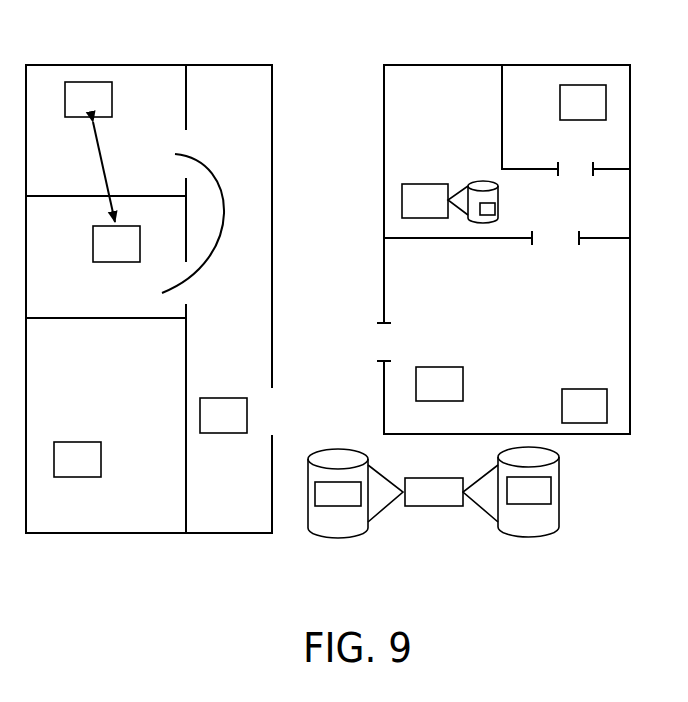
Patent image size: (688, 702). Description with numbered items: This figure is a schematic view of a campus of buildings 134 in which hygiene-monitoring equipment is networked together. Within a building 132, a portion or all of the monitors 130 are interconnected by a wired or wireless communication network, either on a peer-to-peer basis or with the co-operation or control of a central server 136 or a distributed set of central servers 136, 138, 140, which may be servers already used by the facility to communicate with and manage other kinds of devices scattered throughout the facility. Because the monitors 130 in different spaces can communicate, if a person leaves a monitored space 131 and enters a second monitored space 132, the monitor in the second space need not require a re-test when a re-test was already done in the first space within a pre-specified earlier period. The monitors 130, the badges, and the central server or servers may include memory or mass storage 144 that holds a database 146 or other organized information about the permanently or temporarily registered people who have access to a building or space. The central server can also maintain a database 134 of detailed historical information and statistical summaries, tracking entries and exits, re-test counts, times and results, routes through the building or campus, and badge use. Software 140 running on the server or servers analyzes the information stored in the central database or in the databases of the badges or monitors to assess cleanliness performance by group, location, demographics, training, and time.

The monitors 130 is at (335, 257).
The monitored space 131 is at (156, 300).
The building 132 is at (214, 65).
The campus of buildings 134 is at (508, 590).
The central server 136 is at (584, 406).
The central server 138 is at (77, 459).
The central server 140 is at (433, 493).
The mass storage 144 is at (498, 191).
The database 146 is at (495, 209).